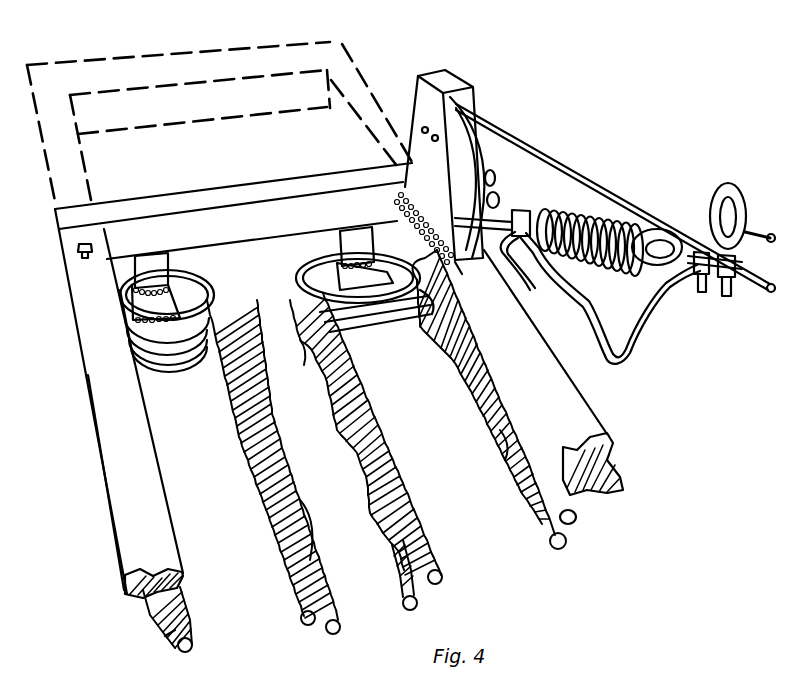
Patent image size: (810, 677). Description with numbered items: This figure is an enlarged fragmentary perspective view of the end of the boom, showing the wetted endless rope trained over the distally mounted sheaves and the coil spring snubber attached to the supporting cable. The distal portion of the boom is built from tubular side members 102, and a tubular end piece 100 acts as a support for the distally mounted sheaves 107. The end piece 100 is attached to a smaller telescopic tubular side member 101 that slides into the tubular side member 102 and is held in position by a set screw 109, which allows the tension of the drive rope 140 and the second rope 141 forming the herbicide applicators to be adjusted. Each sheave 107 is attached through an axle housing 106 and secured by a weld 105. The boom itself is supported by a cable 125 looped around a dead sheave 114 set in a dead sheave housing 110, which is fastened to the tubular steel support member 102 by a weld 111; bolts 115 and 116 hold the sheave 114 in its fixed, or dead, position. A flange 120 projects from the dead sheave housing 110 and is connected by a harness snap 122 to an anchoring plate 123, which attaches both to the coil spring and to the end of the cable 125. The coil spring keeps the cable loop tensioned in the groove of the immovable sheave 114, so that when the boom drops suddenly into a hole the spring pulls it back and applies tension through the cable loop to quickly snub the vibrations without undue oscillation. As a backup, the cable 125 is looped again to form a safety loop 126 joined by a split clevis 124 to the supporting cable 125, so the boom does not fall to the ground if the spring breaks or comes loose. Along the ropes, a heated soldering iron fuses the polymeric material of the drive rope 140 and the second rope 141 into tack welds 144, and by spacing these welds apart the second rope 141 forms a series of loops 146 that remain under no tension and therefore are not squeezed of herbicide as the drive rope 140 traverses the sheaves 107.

The tubular end piece 100 is at (193, 45).
The telescopic tubular side member 101 is at (355, 48).
The tubular side member 102 is at (113, 437).
The weld 105 is at (175, 286).
The axle housing 106 is at (160, 265).
The sheave 107 is at (203, 298).
The set screw 109 is at (78, 256).
The dead sheave housing 110 is at (477, 100).
The weld 111 is at (452, 264).
The dead sheave 114 is at (460, 166).
The bolt 115 is at (430, 121).
The bolt 116 is at (423, 140).
The flange 120 is at (490, 165).
The harness snap 122 is at (499, 192).
The anchoring plate 123 is at (538, 212).
The split clevis 124 is at (735, 258).
The cable 125 is at (753, 291).
The safety loop 126 is at (627, 355).
The drive rope 140 is at (188, 617).
The second rope 141 is at (168, 640).
The tack weld 144 is at (310, 567).
The loop 146 is at (305, 352).